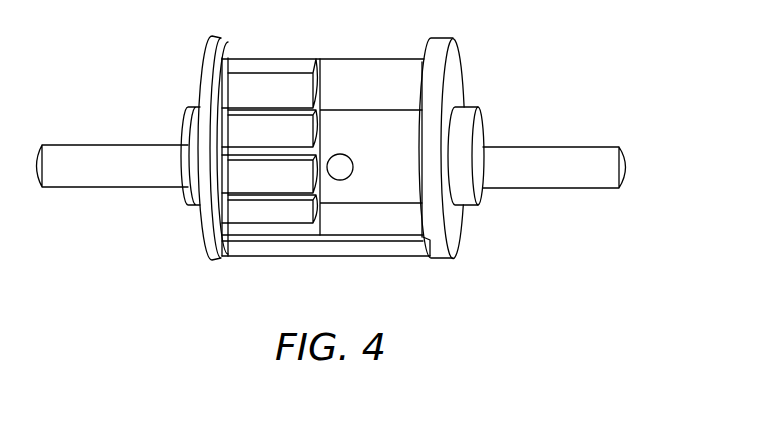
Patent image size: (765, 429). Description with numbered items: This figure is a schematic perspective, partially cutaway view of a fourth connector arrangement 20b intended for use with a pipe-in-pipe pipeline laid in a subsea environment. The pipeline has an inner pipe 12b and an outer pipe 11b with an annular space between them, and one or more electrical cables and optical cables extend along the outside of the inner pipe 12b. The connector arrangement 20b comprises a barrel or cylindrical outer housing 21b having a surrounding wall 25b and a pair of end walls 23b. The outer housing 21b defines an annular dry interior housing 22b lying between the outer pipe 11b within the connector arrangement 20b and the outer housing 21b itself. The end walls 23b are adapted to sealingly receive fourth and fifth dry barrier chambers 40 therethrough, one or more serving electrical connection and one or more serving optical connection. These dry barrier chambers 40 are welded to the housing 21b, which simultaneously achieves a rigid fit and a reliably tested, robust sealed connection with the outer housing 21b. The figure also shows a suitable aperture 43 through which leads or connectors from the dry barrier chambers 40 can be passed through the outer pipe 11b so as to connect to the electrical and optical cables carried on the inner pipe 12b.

The outer pipe 11b is at (177, 127).
The inner pipe 12b is at (590, 182).
The connector arrangement 20b is at (357, 158).
The outer housing 21b is at (357, 57).
The annular dry interior housing 22b is at (393, 65).
The end walls 23b is at (453, 52).
The surrounding wall 25b is at (337, 252).
The dry barrier chambers 40 is at (275, 60).
The aperture 43 is at (349, 161).